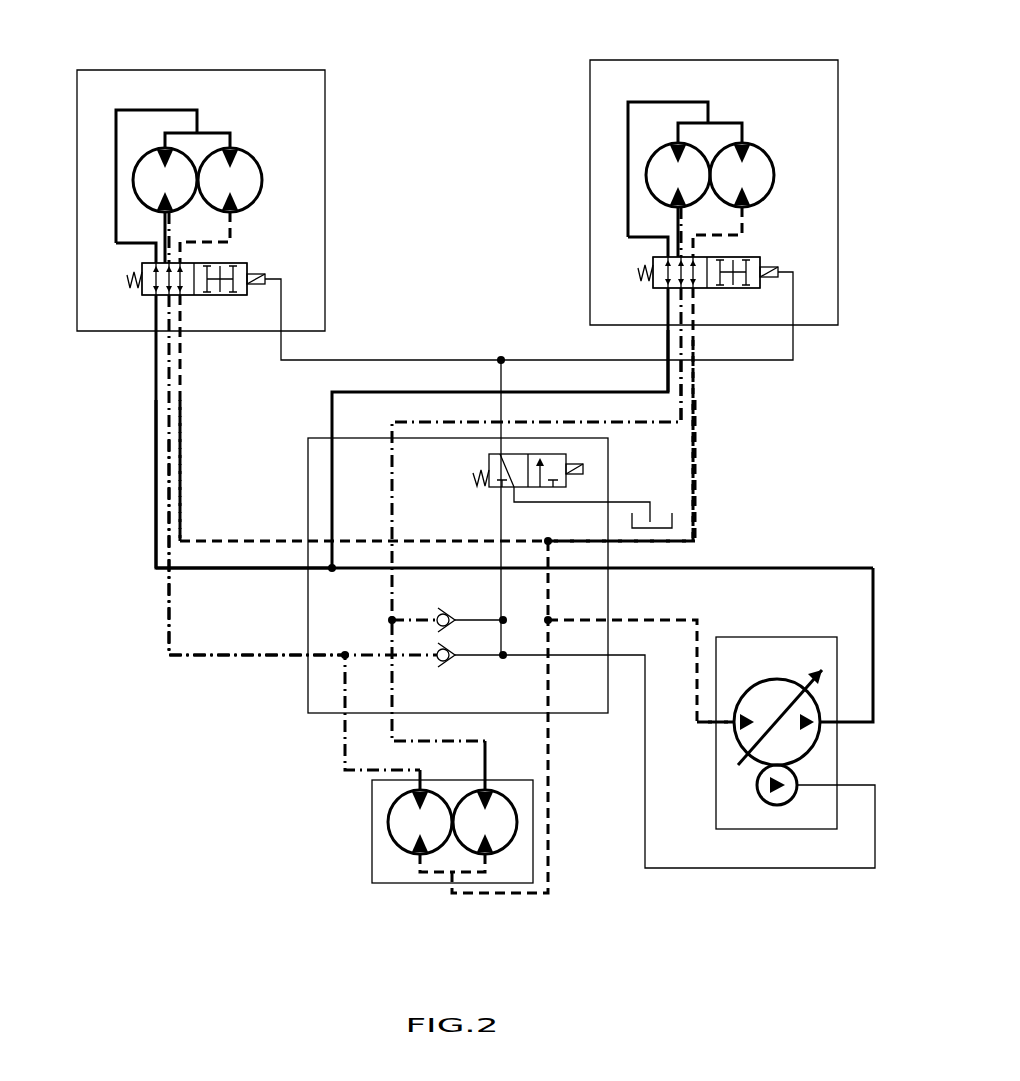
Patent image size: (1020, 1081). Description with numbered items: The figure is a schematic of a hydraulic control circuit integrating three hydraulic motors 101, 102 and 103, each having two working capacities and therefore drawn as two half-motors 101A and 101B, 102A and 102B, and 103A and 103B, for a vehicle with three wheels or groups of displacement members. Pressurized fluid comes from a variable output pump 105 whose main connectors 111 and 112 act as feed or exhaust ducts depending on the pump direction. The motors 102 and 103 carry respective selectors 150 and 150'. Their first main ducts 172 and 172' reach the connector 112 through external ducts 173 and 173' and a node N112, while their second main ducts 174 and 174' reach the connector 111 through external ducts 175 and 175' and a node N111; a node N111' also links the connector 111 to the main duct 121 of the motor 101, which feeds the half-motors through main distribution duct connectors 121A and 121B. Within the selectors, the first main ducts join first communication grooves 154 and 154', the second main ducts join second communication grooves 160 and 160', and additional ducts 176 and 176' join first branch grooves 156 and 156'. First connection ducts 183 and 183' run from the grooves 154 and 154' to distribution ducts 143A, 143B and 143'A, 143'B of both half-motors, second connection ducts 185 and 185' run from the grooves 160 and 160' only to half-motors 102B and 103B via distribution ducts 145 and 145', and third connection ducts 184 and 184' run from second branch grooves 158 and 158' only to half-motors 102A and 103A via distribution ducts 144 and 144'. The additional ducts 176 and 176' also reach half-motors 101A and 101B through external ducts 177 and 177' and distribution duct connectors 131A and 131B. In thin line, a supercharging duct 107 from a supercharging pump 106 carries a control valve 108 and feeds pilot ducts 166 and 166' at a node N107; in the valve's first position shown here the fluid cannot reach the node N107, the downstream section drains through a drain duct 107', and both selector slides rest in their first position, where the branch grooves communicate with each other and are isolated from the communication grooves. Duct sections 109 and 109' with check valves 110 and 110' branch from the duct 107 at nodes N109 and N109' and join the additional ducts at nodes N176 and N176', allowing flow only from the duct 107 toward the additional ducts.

The hydraulic motor 101 is at (382, 865).
The half-motor 101A is at (402, 830).
The half-motor 101B is at (503, 825).
The hydraulic motor 102 is at (290, 87).
The half-motor 102A is at (150, 170).
The half-motor 102B is at (247, 183).
The hydraulic motor 103 is at (803, 77).
The half-motor 103A is at (657, 173).
The half-motor 103B is at (780, 174).
The variable output pump 105 is at (770, 693).
The supercharging pump 106 is at (778, 800).
The supercharging duct 107 is at (591, 674).
The drain duct 107' is at (597, 492).
The control valve 108 is at (475, 460).
The duct section 109 is at (451, 678).
The duct section 109' is at (451, 600).
The check valve 110 is at (462, 665).
The check valve 110' is at (473, 626).
The main connector 111 is at (743, 728).
The main connector 112 is at (817, 727).
The main duct 121 is at (537, 894).
The main distribution duct connector 121A is at (410, 850).
The main distribution duct connector 121B is at (498, 842).
The distribution duct connector 131A is at (413, 797).
The distribution duct connector 131B is at (492, 800).
The distribution duct 143A is at (165, 153).
The distribution duct 143B is at (253, 163).
The distribution duct 143'A is at (700, 97).
The distribution duct 143'B is at (813, 132).
The distribution duct 144 is at (107, 197).
The distribution duct 144' is at (605, 203).
The distribution duct 145 is at (304, 205).
The distribution duct 145' is at (809, 195).
The selector 150 is at (277, 285).
The selector 150' is at (771, 279).
The first communication groove 154 is at (167, 282).
The first communication groove 154' is at (677, 277).
The first branch groove 156 is at (125, 431).
The first branch groove 156' is at (636, 340).
The second branch groove 158 is at (187, 237).
The second branch groove 158' is at (702, 232).
The second communication groove 160 is at (229, 278).
The second communication groove 160' is at (745, 268).
The pilot duct 166 is at (383, 319).
The pilot duct 166' is at (647, 316).
The first main duct 172 is at (131, 475).
The first main duct 172' is at (642, 355).
The external duct 173 is at (217, 484).
The external duct 173' is at (500, 449).
The second main duct 174 is at (215, 418).
The second main duct 174' is at (734, 414).
The external duct 175 is at (437, 510).
The external duct 175' is at (668, 470).
The additional duct 176 is at (209, 448).
The additional duct 176' is at (729, 440).
The external duct 177 is at (294, 599).
The external duct 177' is at (540, 575).
The first connection duct 183 is at (147, 135).
The first connection duct 183' is at (659, 128).
The third connection duct 184 is at (100, 243).
The third connection duct 184' is at (610, 240).
The second connection duct 185 is at (283, 237).
The second connection duct 185' is at (790, 232).
The node N107 is at (499, 358).
The node N109 is at (521, 669).
The node N109' is at (474, 599).
The node N111 is at (575, 563).
The node N111' is at (639, 669).
The node N112 is at (332, 570).
The node N176 is at (303, 643).
The node N176' is at (382, 621).